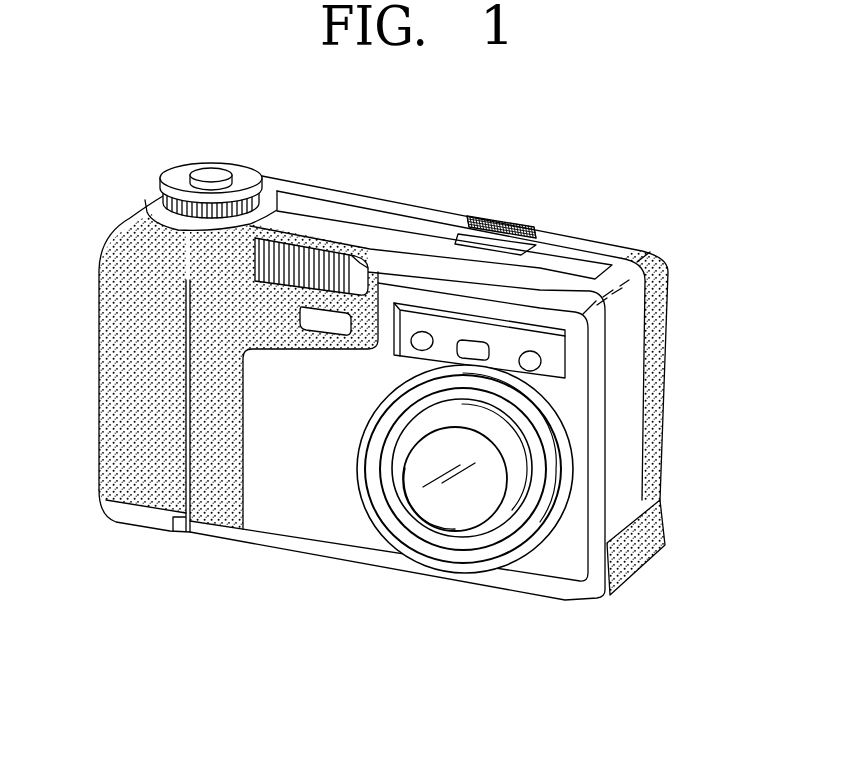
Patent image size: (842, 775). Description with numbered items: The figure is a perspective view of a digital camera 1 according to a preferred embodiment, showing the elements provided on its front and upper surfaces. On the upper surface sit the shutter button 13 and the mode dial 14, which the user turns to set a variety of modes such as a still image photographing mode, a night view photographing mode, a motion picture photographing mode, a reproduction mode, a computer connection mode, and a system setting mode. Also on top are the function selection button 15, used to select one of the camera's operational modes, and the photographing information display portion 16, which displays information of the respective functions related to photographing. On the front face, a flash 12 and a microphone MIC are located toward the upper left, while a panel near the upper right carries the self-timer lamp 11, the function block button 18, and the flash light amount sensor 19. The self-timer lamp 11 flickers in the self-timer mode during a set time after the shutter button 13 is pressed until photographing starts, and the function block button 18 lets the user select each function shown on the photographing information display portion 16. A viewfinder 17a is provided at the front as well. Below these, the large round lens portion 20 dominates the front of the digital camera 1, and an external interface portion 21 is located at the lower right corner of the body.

The digital camera 1 is at (300, 625).
The self-timer lamp 11 is at (422, 331).
The flash 12 is at (300, 257).
The shutter button 13 is at (211, 172).
The mode dial 14 is at (175, 182).
The function selection button 15 is at (489, 216).
The photographing information display portion 16 is at (497, 243).
The viewfinder 17a is at (497, 318).
The function block button 18 is at (484, 343).
The flash light amount sensor 19 is at (542, 359).
The lens portion 20 is at (483, 483).
The external interface portion 21 is at (655, 530).
The microphone MIC is at (334, 318).